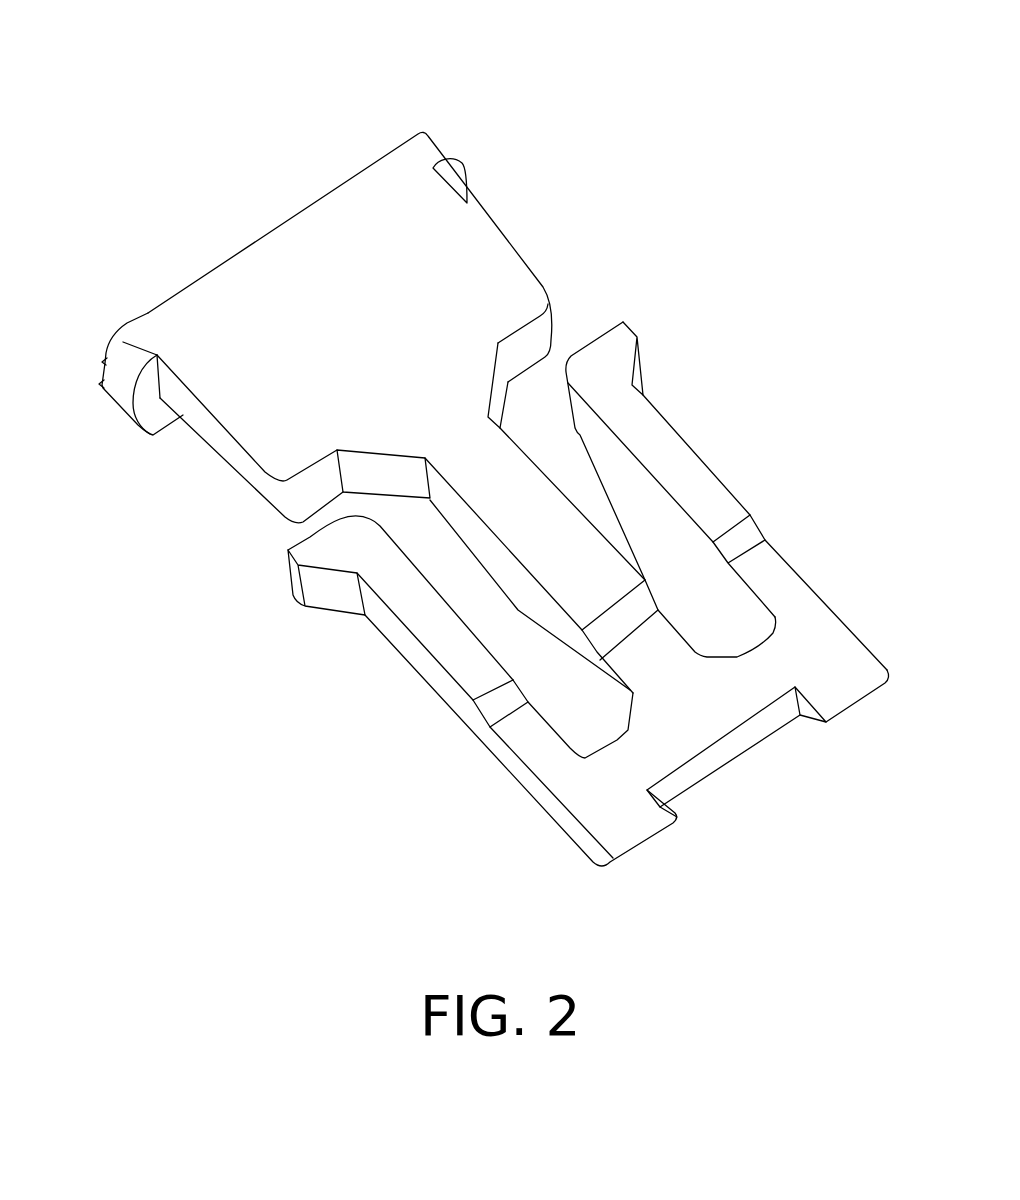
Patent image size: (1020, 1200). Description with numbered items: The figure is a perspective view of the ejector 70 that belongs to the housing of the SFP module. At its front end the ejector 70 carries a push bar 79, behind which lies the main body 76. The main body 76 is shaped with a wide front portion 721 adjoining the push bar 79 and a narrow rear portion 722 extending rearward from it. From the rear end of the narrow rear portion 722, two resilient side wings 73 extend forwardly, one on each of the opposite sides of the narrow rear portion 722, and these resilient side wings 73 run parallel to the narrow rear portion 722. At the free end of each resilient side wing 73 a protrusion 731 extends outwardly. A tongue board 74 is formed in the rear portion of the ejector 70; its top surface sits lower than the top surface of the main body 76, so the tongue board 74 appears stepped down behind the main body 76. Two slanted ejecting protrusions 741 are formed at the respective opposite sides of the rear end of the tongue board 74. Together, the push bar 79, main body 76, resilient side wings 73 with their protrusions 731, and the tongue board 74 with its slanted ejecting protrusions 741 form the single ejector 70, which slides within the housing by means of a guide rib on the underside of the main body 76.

The ejector 70 is at (422, 46).
The wide front portion 721 is at (462, 253).
The main body 76 is at (455, 415).
The push bar 79 is at (150, 332).
The protrusion 731 is at (617, 345).
The resilient side wing 73 is at (676, 462).
The narrow rear portion 722 is at (580, 577).
The tongue board 74 is at (682, 710).
The slanted ejecting protrusion 741 is at (840, 680).